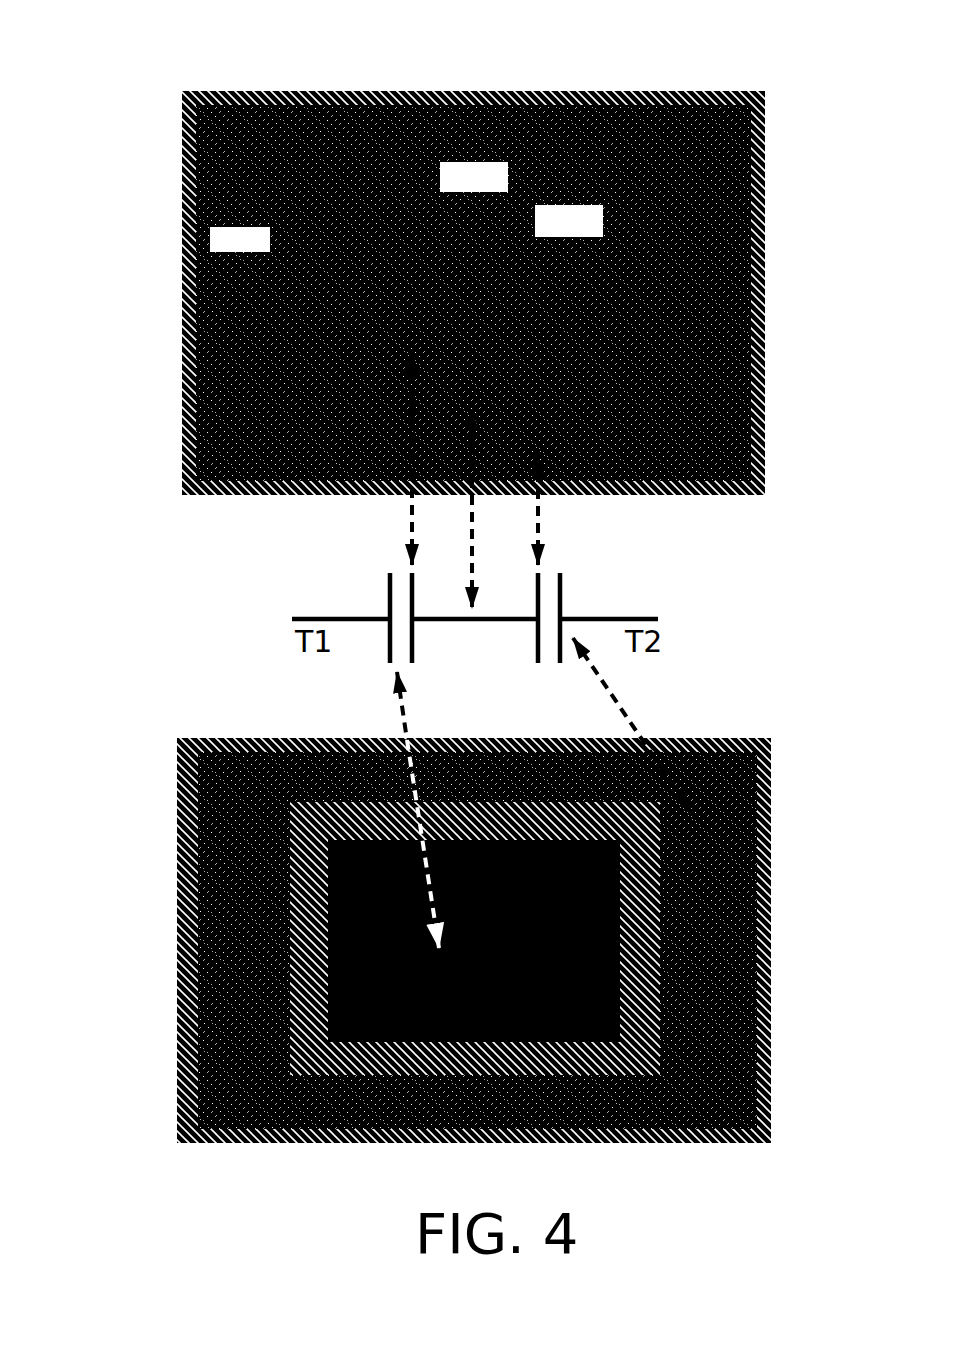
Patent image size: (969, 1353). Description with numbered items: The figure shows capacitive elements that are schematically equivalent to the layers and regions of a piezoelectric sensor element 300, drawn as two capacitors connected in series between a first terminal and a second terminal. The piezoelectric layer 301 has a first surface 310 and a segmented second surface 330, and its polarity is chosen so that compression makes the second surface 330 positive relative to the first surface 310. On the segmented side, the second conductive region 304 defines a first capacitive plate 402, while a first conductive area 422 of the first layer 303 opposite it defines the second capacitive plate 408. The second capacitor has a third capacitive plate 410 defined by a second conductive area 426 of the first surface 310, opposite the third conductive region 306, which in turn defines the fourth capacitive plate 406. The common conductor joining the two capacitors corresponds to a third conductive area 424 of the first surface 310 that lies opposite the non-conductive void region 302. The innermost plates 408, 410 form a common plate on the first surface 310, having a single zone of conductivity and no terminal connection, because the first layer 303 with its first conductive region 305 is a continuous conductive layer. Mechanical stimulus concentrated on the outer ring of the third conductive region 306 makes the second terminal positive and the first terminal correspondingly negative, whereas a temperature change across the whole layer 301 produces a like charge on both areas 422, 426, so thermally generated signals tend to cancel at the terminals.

The piezoelectric sensor element 300 is at (416, 64).
The piezoelectric layer 301 is at (183, 213).
The first layer 303 is at (399, 293).
The first conductive region 305 is at (260, 427).
The first surface 310 is at (450, 293).
The first conductive area 422 is at (588, 232).
The third conductive area 424 is at (493, 189).
The second conductive area 426 is at (262, 251).
The first capacitive plate 402 is at (382, 582).
The fourth capacitive plate 406 is at (567, 571).
The second capacitive plate 408 is at (418, 670).
The third capacitive plate 410 is at (541, 670).
The second surface 330 is at (462, 901).
The third conductive region 306 is at (272, 918).
The non-conductive void region 302 is at (343, 833).
The second conductive region 304 is at (500, 891).